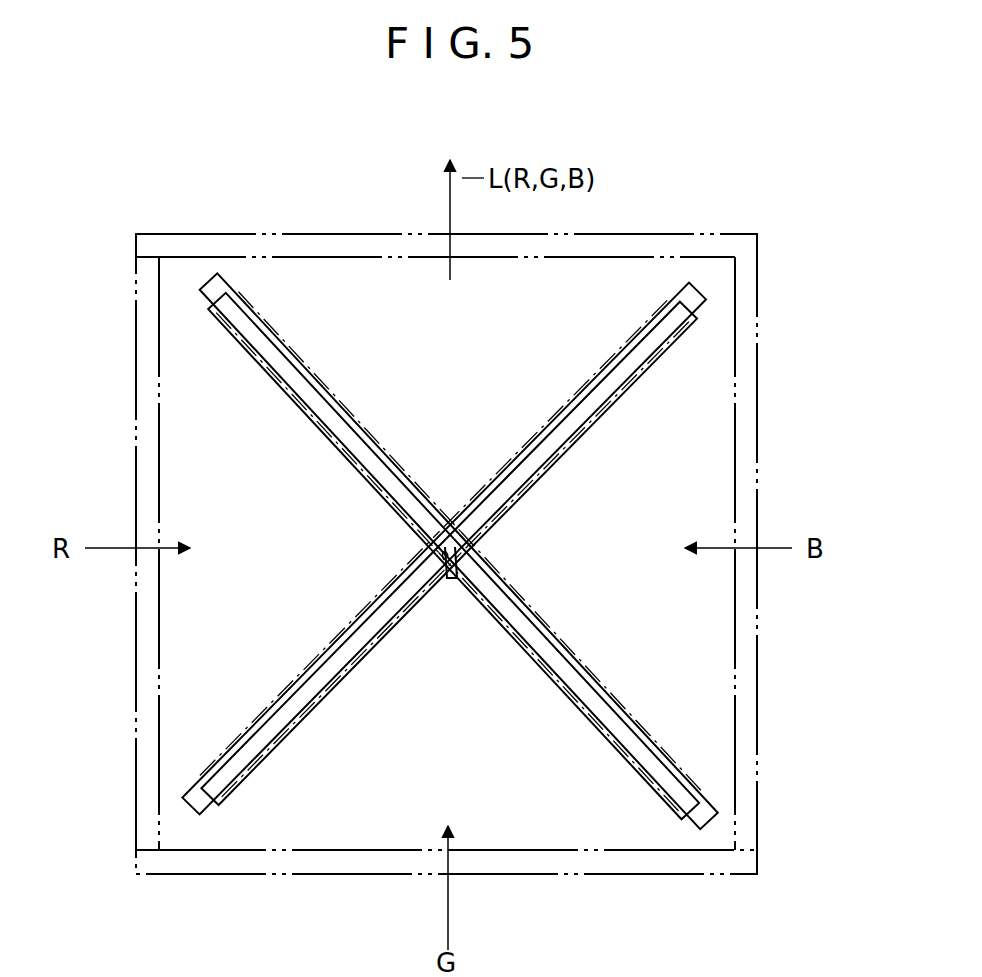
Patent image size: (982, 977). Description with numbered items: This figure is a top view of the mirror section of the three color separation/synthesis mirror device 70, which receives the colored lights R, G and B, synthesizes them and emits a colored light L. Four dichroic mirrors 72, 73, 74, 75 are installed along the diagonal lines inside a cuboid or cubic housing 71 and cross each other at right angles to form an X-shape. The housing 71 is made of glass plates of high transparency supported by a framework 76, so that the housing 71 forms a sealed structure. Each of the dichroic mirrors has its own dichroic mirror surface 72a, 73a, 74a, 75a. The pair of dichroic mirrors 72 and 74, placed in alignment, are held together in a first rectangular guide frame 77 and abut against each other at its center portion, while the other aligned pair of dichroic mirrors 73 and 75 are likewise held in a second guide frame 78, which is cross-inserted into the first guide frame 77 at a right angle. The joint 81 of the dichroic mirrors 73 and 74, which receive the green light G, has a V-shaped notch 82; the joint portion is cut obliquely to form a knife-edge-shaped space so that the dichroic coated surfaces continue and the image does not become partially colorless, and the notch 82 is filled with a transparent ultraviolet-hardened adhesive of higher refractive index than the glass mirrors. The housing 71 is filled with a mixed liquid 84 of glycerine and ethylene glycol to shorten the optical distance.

The three color separation/synthesis mirror device 70 is at (303, 826).
The housing 71 is at (763, 402).
The framework 76 is at (760, 285).
The dichroic mirror 72 is at (324, 430).
The dichroic mirror surface 72a is at (306, 371).
The dichroic mirror 73 is at (320, 713).
The dichroic mirror surface 73a is at (282, 700).
The dichroic mirror 74 is at (628, 770).
The dichroic mirror surface 74a is at (630, 716).
The dichroic mirror 75 is at (648, 372).
The dichroic mirror surface 75a is at (620, 350).
The first rectangular guide frame 77 is at (256, 310).
The second guide frame 78 is at (564, 400).
The joint 81 is at (451, 584).
The V-shaped notch 82 is at (441, 574).
The mixed liquid 84 is at (466, 399).